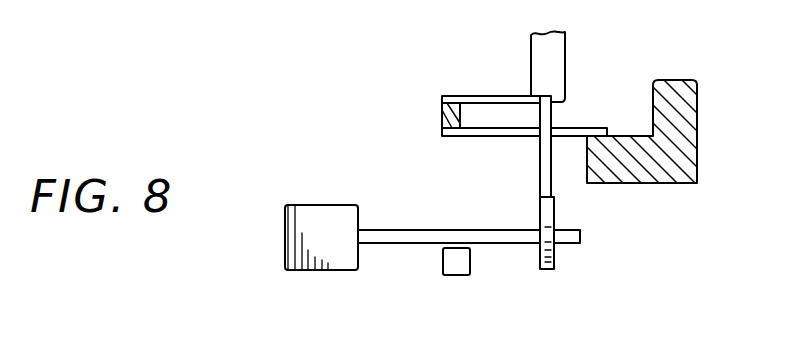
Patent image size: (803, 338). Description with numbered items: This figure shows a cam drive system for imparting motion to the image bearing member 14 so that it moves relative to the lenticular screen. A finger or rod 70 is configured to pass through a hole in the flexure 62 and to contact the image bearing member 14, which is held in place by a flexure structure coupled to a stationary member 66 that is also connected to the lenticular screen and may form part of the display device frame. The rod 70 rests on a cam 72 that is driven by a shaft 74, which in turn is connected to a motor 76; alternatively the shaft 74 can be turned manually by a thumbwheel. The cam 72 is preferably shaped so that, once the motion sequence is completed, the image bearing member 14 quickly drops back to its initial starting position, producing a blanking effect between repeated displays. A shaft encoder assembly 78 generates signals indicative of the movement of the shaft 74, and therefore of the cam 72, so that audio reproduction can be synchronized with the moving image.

The image bearing member 14 is at (545, 52).
The spacer 62 is at (500, 138).
The stationary member 66 is at (668, 103).
The rod 70 is at (552, 178).
The cam 72 is at (554, 263).
The shaft 74 is at (392, 243).
The motor 76 is at (307, 235).
The shaft encoder assembly 78 is at (458, 267).